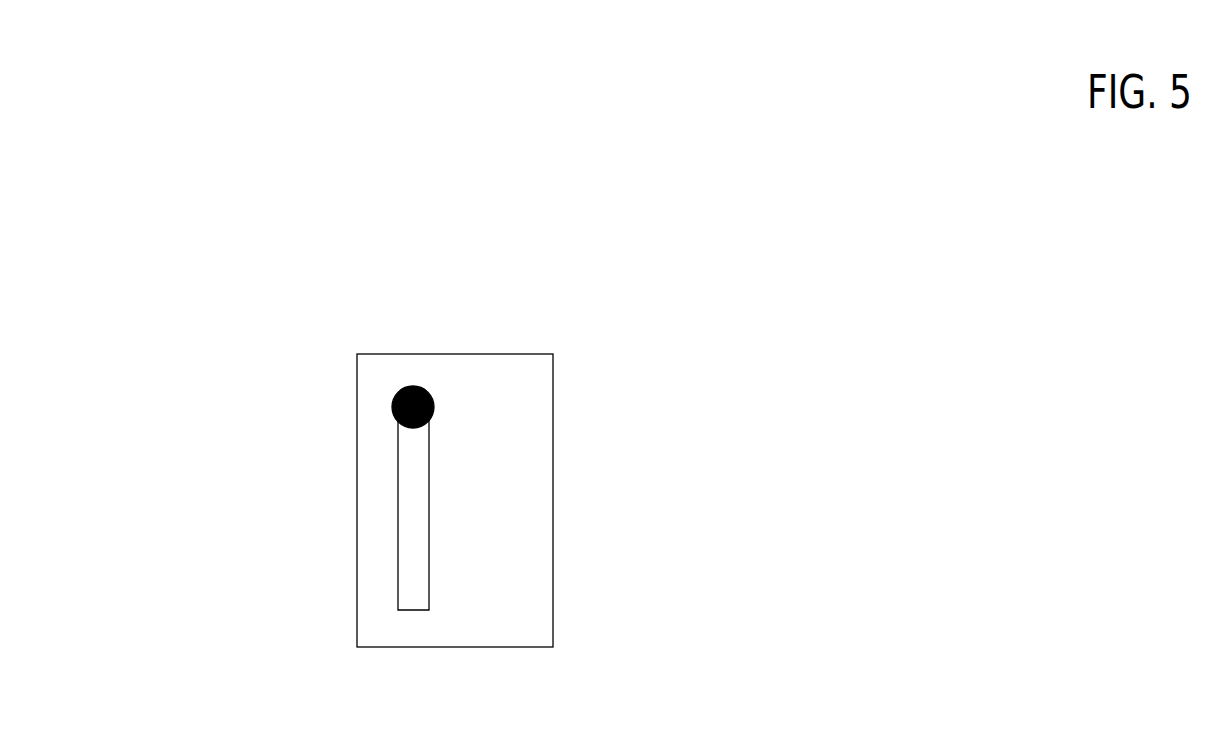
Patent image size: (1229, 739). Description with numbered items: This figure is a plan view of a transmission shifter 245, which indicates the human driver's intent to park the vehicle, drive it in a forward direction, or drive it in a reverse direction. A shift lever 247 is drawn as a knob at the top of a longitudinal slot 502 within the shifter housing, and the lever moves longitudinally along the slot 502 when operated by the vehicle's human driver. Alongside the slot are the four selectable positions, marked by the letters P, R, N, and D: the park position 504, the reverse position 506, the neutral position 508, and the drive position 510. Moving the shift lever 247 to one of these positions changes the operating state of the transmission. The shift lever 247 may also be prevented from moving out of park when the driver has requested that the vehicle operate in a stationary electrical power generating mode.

The transmission shifter 245 is at (553, 647).
The shift lever 247 is at (402, 418).
The slot 502 is at (390, 552).
The park position 504 is at (516, 405).
The reverse position 506 is at (516, 470).
The neutral position 508 is at (516, 541).
The drive position 510 is at (518, 605).